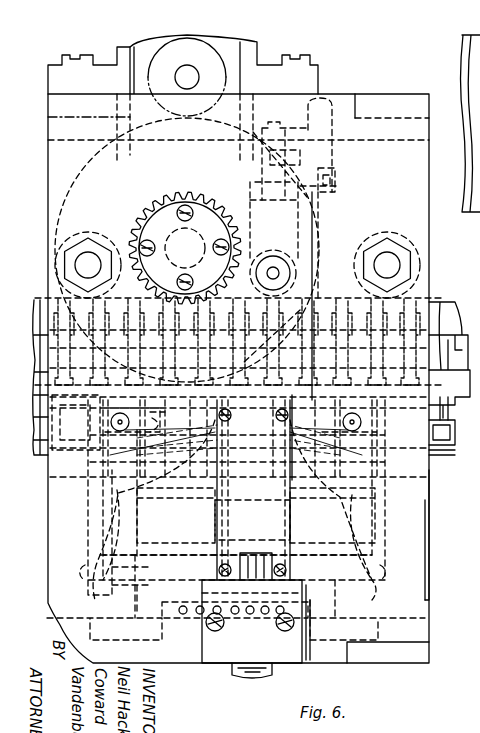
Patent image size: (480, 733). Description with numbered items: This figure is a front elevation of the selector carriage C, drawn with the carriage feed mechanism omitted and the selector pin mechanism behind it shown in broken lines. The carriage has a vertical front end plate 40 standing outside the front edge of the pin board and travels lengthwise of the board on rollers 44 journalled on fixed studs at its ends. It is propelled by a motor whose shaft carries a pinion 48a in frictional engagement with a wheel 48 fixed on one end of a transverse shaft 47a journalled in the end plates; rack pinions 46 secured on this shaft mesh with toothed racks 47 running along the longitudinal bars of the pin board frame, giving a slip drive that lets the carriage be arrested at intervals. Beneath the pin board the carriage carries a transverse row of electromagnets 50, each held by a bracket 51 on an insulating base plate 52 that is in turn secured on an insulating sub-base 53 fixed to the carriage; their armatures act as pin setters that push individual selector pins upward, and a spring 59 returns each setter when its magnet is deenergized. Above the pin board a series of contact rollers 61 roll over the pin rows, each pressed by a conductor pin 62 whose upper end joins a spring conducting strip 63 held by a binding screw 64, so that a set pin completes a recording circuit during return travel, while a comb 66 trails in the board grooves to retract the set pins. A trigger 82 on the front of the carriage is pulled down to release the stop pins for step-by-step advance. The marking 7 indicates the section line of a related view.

The pinion 48a is at (215, 67).
The wheel 48 is at (88, 160).
The rack pinions 46 is at (185, 237).
The transverse shaft 47a is at (178, 241).
The rollers 44 is at (90, 238).
The spring conducting strip 63 is at (307, 112).
The conductor pins 62 is at (286, 160).
The terminal or binding screw 64 is at (336, 168).
The contact elements 61 is at (295, 263).
The comb 66 is at (313, 262).
The section line 7 is at (313, 296).
The toothed racks 47 is at (438, 300).
The electromagnets 50 is at (200, 490).
The bracket 51 is at (245, 525).
The base plate 52 is at (136, 556).
The sub-base 53 is at (110, 646).
The trigger 82 is at (270, 525).
The selector carriage C is at (420, 527).
The spring 59 is at (425, 543).
The front end plate 40 is at (428, 579).